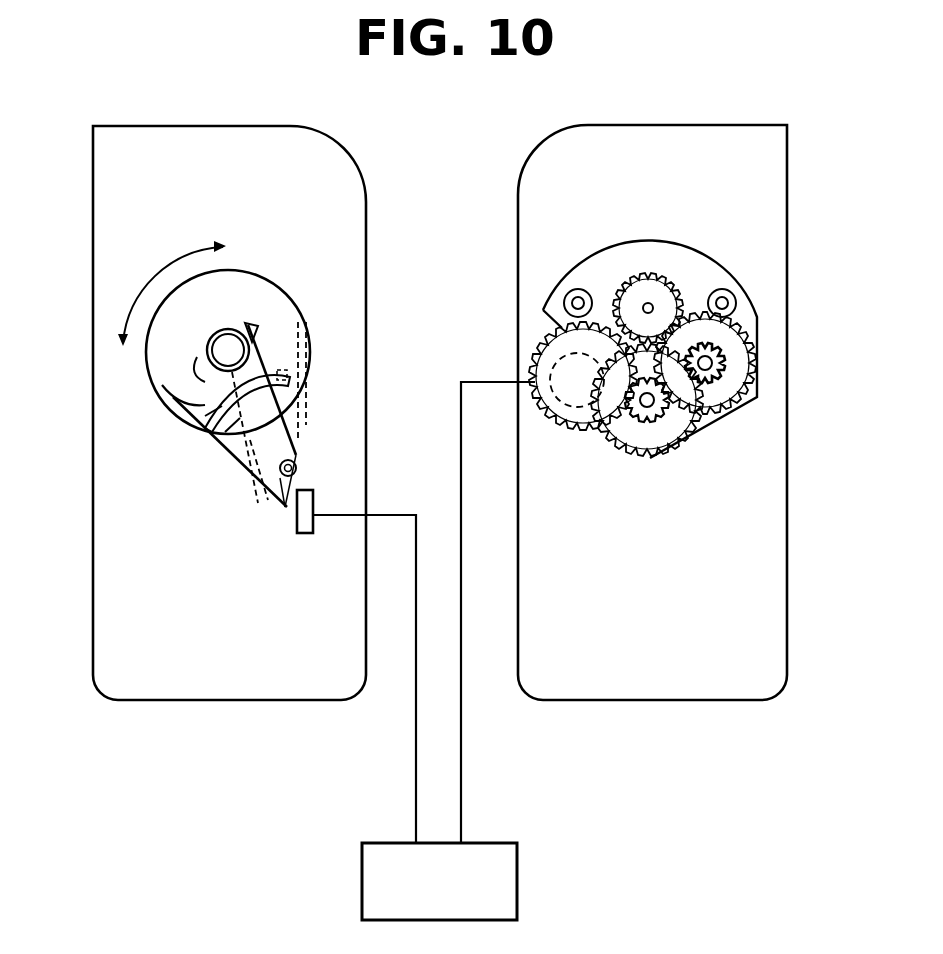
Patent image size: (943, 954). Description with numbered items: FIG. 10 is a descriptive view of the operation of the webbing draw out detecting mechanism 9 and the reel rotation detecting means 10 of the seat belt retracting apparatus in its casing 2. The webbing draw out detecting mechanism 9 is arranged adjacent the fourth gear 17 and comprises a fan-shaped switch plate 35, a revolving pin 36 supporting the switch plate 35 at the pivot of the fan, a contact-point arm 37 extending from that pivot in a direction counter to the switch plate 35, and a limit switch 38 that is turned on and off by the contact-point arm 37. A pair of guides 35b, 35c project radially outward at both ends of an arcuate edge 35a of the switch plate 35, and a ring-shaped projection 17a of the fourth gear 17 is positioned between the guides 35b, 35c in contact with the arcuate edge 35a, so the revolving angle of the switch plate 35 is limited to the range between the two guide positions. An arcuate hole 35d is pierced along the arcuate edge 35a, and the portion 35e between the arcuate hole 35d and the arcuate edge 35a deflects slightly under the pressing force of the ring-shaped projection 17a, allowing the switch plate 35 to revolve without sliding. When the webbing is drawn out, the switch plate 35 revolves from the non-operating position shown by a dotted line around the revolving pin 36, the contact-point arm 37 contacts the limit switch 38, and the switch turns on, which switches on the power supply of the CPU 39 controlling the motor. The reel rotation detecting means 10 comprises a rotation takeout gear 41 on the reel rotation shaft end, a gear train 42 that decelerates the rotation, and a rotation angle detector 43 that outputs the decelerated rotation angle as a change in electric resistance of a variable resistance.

The housing 2 is at (313, 127).
The webbing draw out detecting mechanism 9 is at (307, 405).
The reel rotation detecting means 10 is at (767, 337).
The fourth gear 17 is at (286, 293).
The ring-shaped projection 17a is at (230, 329).
The switch plate 35 is at (230, 443).
The arcuate edge 35a is at (178, 398).
The guide 35b is at (252, 340).
The guide 35c is at (183, 372).
The arcuate hole 35d is at (225, 432).
The portion between the arcuate hole and the arcuate edge 35e is at (205, 416).
The revolving pin 36 is at (257, 503).
The contact-point arm 37 is at (285, 507).
The limit switch 38 is at (307, 535).
The central processing unit (CPU) 39 is at (517, 876).
The rotation takeout gear 41 is at (683, 290).
The gear train 42 is at (647, 457).
The rotation angle detector 43 is at (570, 433).